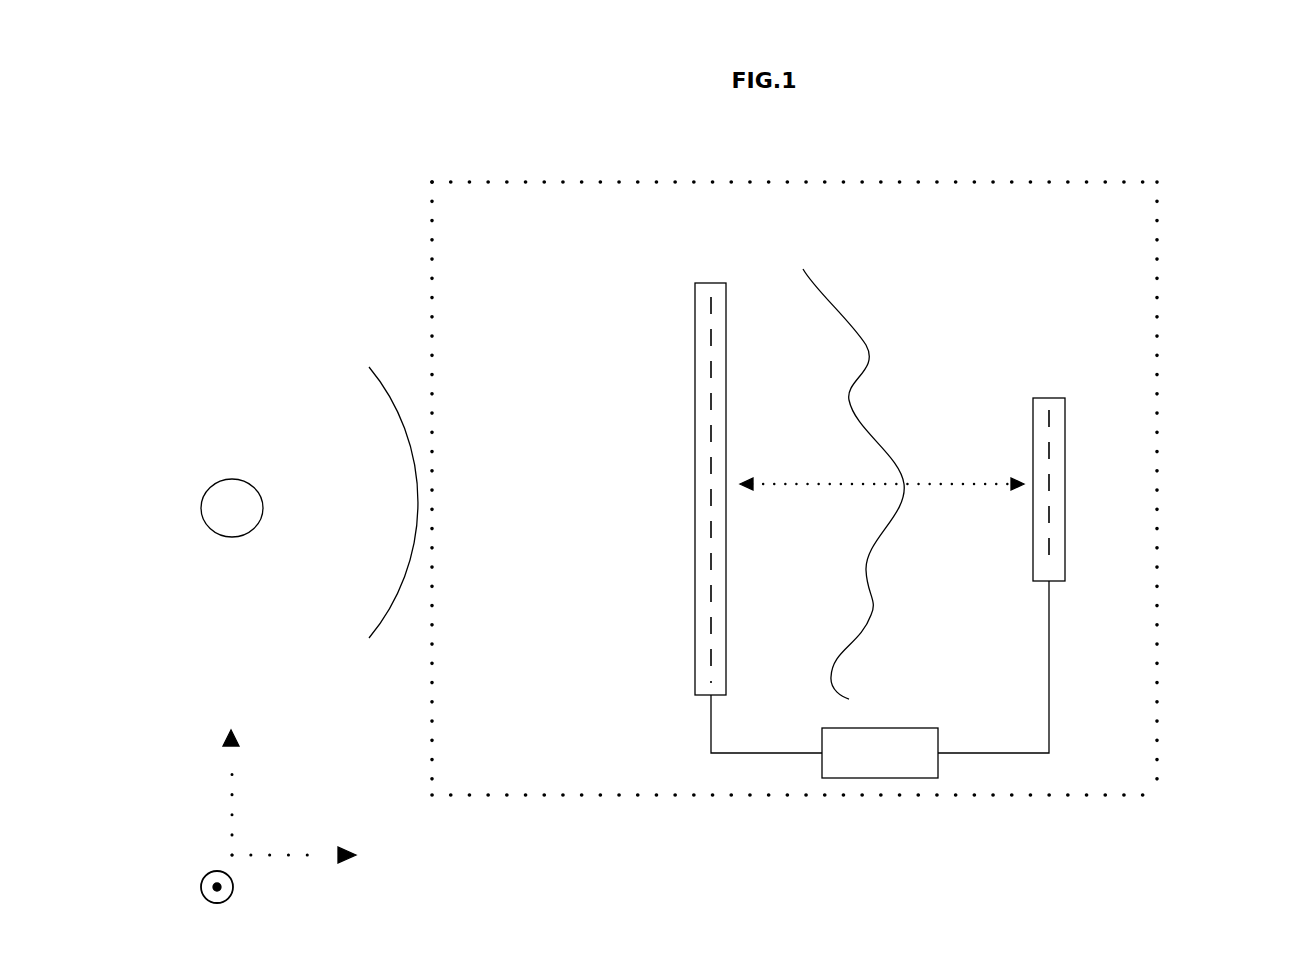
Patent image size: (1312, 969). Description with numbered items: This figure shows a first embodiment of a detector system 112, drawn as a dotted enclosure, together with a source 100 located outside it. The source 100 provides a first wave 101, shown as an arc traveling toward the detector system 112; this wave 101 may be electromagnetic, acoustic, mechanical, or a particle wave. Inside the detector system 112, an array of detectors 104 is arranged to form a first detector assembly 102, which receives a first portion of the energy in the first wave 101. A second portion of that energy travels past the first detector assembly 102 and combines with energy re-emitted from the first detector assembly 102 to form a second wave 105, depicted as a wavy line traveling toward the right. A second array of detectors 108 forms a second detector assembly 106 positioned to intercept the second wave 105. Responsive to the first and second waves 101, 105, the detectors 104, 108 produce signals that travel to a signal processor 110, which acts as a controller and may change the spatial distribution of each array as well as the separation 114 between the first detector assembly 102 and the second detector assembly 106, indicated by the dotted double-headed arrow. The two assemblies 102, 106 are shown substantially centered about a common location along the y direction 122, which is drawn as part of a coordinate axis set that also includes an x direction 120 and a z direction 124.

The source 100 is at (232, 508).
The first wave 101 is at (382, 491).
The first detector assembly 102 is at (708, 283).
The detectors 104 is at (711, 305).
The second wave 105 is at (847, 472).
The second detector assembly 106 is at (1046, 398).
The detectors 108 is at (1050, 565).
The signal processor 110 is at (885, 728).
The detector system 112 is at (1157, 303).
The separation 114 is at (882, 475).
The x axis 120 is at (330, 856).
The y direction 122 is at (232, 759).
The z axis 124 is at (232, 898).